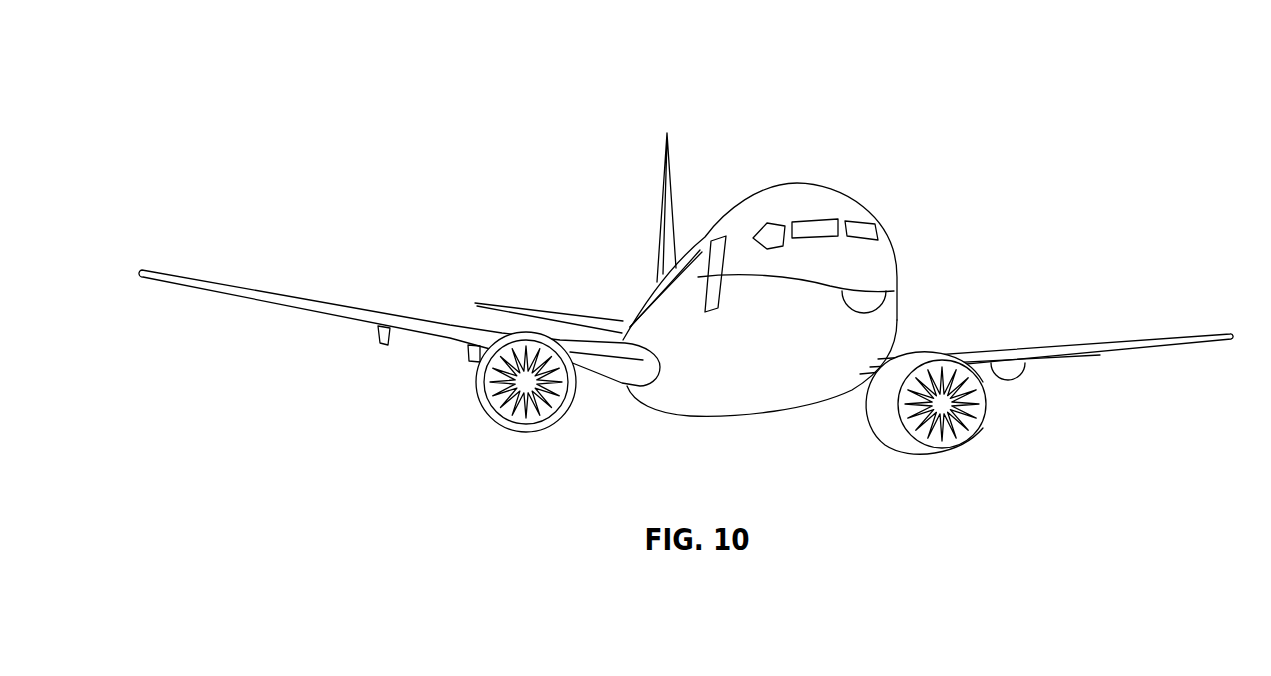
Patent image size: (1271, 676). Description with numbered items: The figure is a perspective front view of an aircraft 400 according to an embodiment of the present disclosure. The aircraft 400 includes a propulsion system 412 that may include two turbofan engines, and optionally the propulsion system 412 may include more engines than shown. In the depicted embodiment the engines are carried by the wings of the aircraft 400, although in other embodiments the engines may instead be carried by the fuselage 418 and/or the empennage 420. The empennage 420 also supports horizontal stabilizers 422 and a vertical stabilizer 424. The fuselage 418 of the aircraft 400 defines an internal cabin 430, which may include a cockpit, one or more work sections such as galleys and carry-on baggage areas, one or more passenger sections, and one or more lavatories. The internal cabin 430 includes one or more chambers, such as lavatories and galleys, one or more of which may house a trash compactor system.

The aircraft 400 is at (413, 76).
The propulsion system 412 is at (1036, 444).
The fuselage 418 is at (902, 253).
The empennage 420 is at (653, 287).
The horizontal stabilizers 422 is at (518, 308).
The vertical stabilizer 424 is at (663, 173).
The internal cabin 430 is at (818, 227).